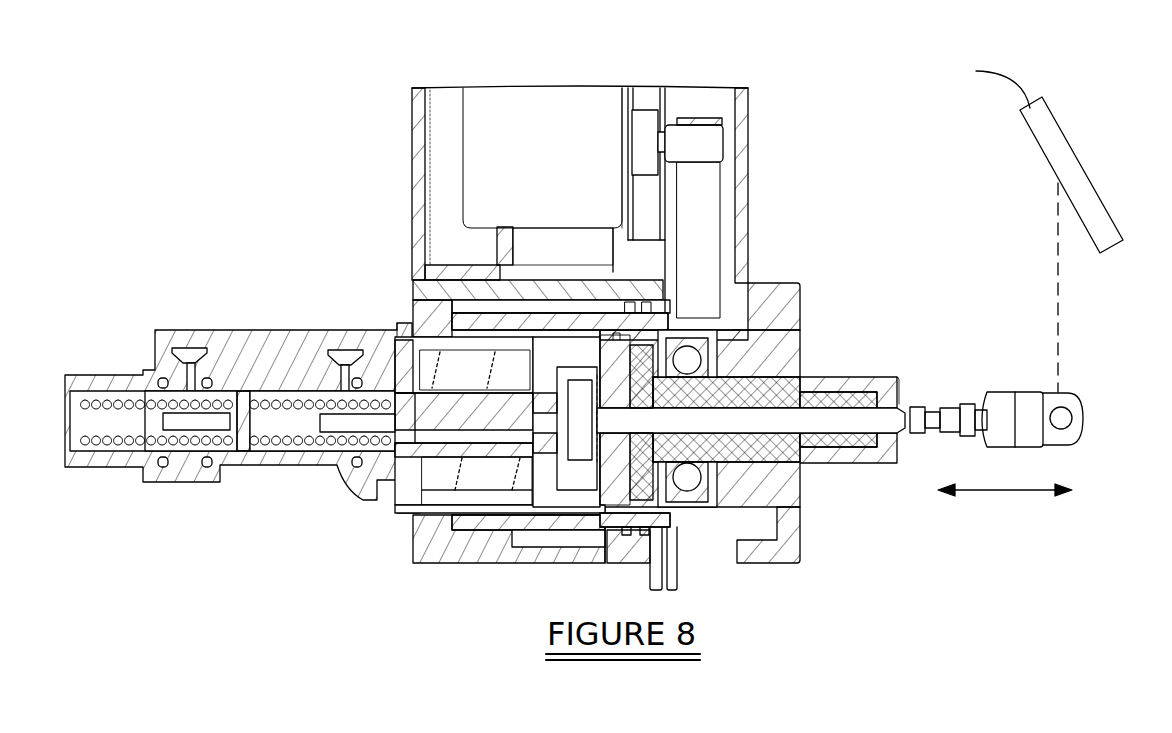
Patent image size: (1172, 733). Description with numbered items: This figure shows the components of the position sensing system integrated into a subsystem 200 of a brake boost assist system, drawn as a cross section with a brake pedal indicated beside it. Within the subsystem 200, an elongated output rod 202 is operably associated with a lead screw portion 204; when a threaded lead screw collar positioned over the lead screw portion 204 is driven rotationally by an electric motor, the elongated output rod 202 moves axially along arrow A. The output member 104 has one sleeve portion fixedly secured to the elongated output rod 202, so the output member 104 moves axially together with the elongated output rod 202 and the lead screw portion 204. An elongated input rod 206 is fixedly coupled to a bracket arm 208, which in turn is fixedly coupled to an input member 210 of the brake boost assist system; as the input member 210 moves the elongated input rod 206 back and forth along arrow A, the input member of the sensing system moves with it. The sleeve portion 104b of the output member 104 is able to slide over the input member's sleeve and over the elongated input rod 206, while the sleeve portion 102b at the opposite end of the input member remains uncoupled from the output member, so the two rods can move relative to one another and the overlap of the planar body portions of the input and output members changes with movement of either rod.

The subsystem 200 is at (815, 366).
The elongated output rod 202 is at (605, 502).
The lead screw portion 204 is at (728, 436).
The elongated input rod 206 is at (613, 340).
The bracket arm 208 is at (630, 360).
The input member 210 is at (623, 420).
The output member 104 is at (528, 470).
The sleeve portion 104b is at (540, 335).
The sleeve portion 102b is at (532, 494).